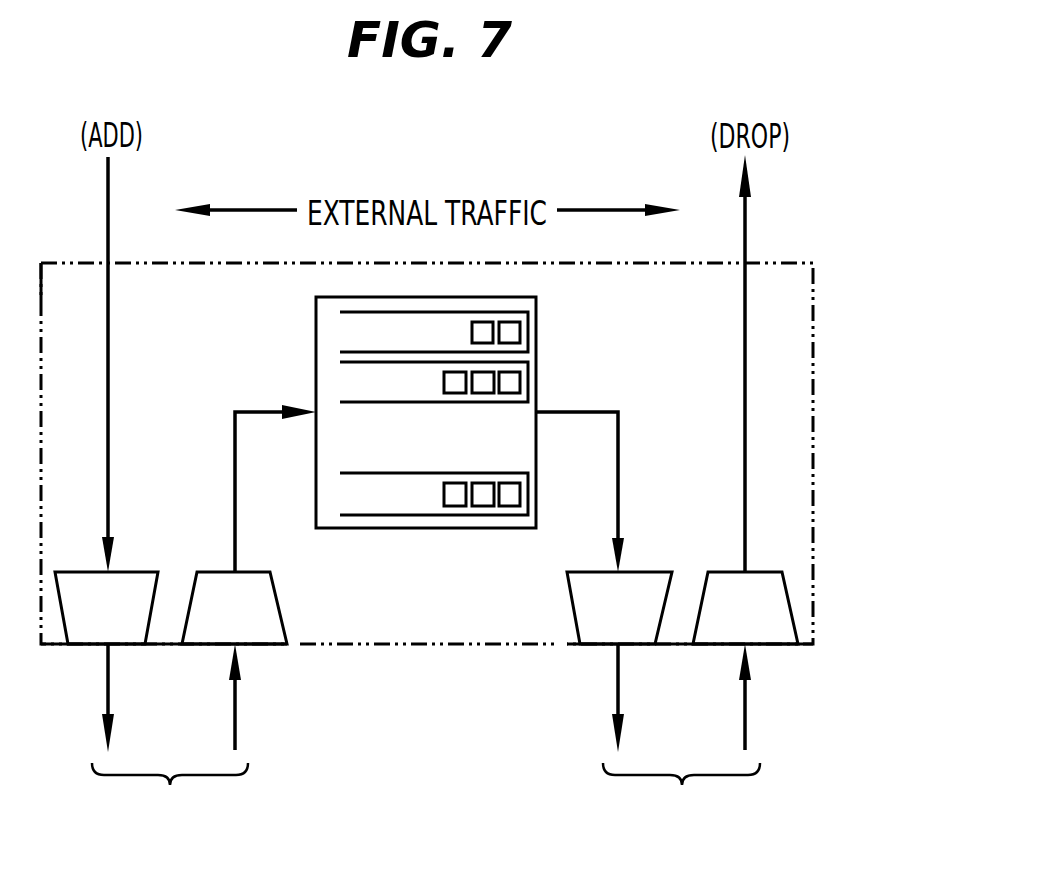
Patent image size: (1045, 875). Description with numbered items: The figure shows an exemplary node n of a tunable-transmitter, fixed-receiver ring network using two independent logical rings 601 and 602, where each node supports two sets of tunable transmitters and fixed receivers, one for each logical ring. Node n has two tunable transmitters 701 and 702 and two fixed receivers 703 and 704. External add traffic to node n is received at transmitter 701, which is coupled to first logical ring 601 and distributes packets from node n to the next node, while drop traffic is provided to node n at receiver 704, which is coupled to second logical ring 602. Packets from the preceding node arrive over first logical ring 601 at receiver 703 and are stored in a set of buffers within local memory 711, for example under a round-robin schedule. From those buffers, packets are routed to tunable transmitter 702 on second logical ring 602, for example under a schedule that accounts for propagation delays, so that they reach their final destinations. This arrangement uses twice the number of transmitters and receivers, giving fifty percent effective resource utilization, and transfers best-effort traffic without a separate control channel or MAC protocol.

The first logical ring 601 is at (170, 798).
The second logical ring 602 is at (681, 798).
The tunable transmitter 701 is at (130, 571).
The tunable transmitter 702 is at (570, 615).
The fixed receiver 703 is at (278, 610).
The fixed receiver 704 is at (727, 571).
The local memory 711 is at (540, 357).
The node n is at (925, 338).